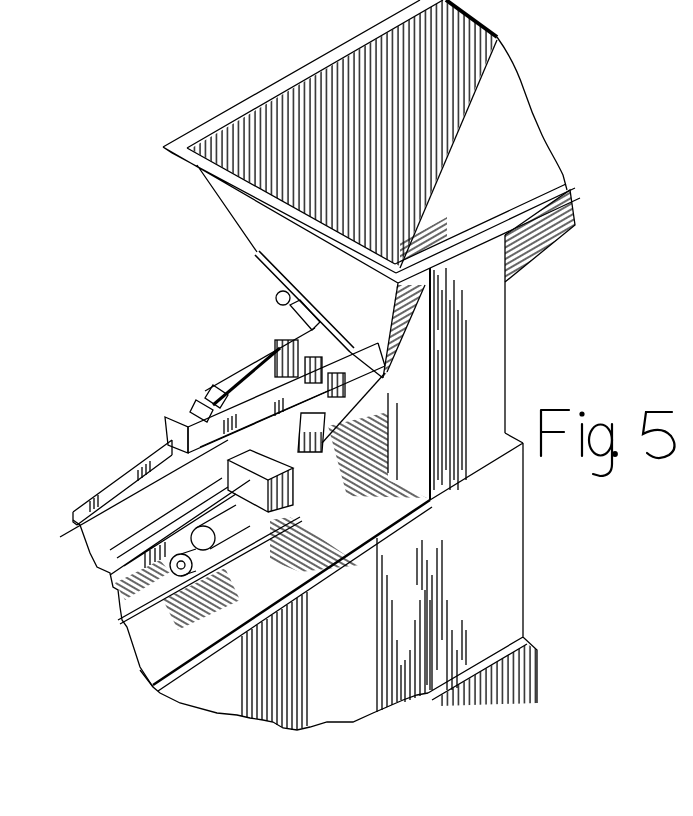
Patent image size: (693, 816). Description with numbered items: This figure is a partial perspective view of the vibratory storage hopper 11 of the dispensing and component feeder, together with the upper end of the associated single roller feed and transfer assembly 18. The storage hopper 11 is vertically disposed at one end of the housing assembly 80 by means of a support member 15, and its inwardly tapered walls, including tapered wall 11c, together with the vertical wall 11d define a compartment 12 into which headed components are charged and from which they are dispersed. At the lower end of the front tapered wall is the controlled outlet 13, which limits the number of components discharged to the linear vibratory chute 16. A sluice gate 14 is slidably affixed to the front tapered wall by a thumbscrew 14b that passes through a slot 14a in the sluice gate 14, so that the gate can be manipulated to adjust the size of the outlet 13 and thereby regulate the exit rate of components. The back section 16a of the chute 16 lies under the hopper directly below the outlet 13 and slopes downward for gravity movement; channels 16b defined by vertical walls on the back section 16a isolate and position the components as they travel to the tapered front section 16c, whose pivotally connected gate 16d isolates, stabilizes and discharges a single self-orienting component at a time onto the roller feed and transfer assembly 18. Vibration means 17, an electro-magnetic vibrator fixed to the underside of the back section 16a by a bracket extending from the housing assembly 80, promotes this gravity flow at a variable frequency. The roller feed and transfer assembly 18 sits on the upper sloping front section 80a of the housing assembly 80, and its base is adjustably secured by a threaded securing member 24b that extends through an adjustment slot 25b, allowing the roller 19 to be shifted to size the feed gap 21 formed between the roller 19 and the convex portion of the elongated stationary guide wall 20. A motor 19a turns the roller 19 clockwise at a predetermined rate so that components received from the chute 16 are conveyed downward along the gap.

The storage hopper 11 is at (210, 122).
The inwardly tapered wall 11c is at (484, 177).
The vertical wall 11d is at (378, 117).
The inlet 12 is at (470, 68).
The controlled outlet 13 is at (276, 341).
The sluice gate 14 is at (262, 262).
The slot 14a is at (307, 318).
The thumbscrew 14b is at (277, 297).
The support member 15 is at (497, 332).
The linear vibratory chute 16 is at (240, 364).
The back section 16a is at (340, 400).
The channels 16b is at (350, 350).
The tapered front section 16c is at (255, 383).
The pivotally connected gate 16d is at (207, 397).
The vibration means 17 is at (384, 377).
The single roller feed and transfer assembly 18 is at (120, 620).
The roller 19 is at (135, 533).
The motor 19a is at (224, 540).
The elongated stationary guide wall 20 is at (113, 485).
The feed gap 21 is at (62, 537).
The threaded securing member 24b is at (195, 552).
The adjustment slot 25b is at (178, 578).
The housing assembly 80 is at (510, 560).
The upper sloping front section 80a is at (293, 580).